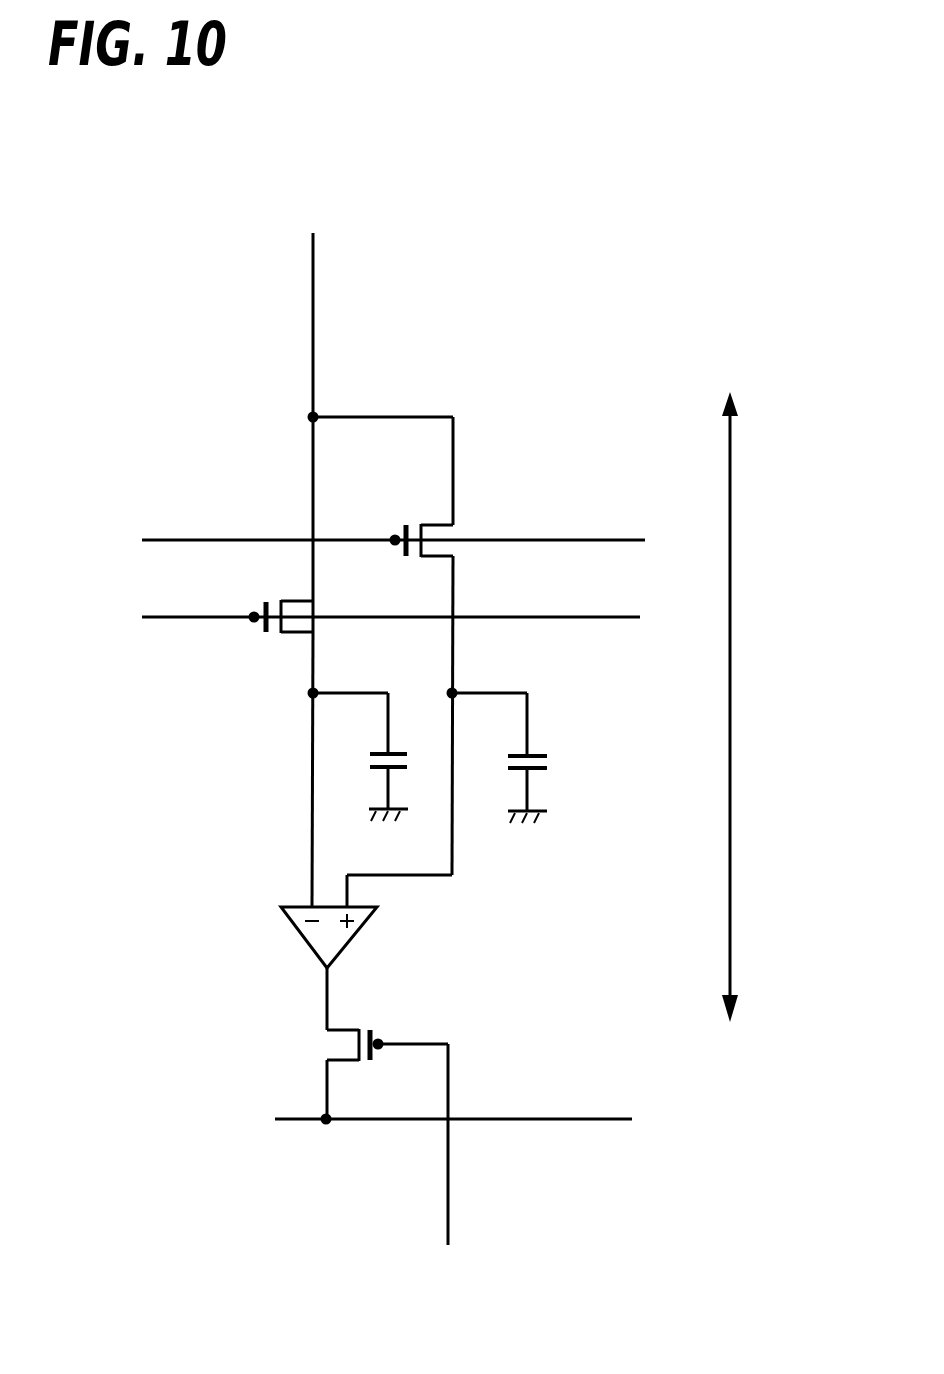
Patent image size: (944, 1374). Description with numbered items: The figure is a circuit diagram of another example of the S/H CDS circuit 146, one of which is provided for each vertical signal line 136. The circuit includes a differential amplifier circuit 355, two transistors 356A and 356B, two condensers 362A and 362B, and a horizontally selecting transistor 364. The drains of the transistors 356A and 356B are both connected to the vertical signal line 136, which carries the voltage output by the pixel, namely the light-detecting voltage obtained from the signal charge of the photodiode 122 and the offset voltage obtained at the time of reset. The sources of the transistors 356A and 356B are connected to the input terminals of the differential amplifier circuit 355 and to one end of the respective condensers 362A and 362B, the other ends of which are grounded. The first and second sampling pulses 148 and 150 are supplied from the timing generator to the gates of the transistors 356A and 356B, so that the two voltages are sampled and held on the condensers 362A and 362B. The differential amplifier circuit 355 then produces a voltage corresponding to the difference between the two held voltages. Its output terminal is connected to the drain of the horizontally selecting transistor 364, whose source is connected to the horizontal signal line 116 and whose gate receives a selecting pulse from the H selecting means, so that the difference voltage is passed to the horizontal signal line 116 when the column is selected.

The vertical signal line 136 is at (313, 292).
The photodiode 122 is at (298, 723).
The second sampling pulse 150 is at (545, 540).
The first sampling pulse 148 is at (545, 617).
The transistor 356B is at (407, 525).
The transistor 356A is at (263, 633).
The condenser 362A is at (407, 752).
The condenser 362B is at (545, 757).
The differential amplifier circuit 355 is at (357, 932).
The horizontally selecting transistor 364 is at (337, 1045).
The horizontal signal line 116 is at (585, 1119).
The S/H CDS circuit 146 is at (730, 702).